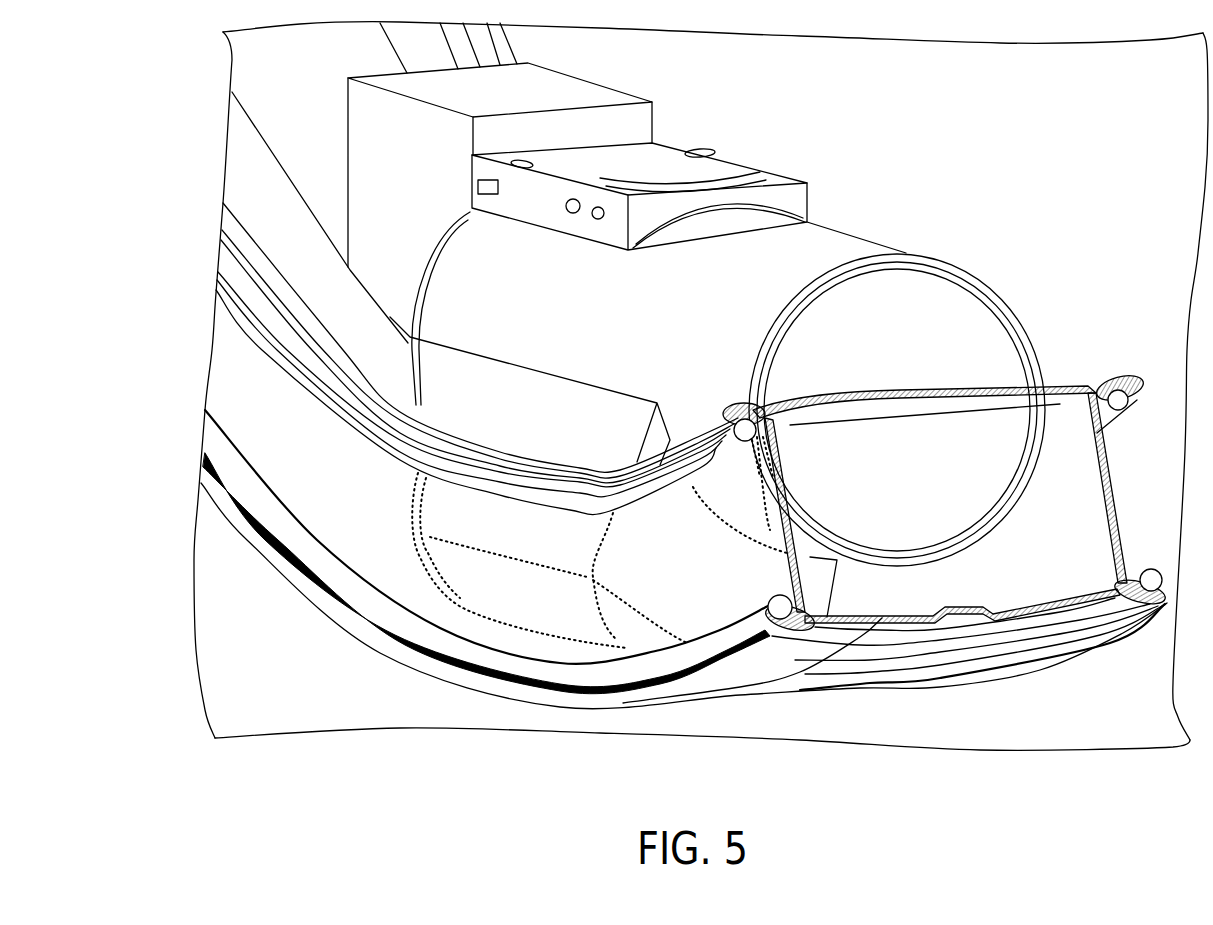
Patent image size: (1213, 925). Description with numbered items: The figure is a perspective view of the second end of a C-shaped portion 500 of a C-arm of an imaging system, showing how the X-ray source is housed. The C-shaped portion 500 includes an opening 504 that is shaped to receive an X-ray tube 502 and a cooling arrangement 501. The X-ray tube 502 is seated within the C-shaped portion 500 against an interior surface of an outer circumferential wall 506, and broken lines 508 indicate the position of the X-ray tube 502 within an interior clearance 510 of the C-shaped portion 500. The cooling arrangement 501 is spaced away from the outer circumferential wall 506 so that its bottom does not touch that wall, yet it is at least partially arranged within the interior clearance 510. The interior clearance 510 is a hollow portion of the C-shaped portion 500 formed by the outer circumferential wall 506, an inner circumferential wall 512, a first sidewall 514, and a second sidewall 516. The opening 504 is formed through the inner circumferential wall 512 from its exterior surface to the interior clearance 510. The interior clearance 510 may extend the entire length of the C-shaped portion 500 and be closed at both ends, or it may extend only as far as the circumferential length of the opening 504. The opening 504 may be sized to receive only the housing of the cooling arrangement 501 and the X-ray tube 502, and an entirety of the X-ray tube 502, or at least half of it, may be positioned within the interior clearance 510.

The C-shaped portion 500 is at (390, 655).
The cooling arrangement 501 is at (607, 88).
The X-ray tube 502 is at (850, 233).
The opening 504 is at (430, 420).
The outer circumferential wall 506 is at (1008, 608).
The broken lines 508 is at (393, 539).
The interior clearance 510 is at (945, 530).
The inner circumferential wall 512 is at (945, 393).
The first sidewall 514 is at (791, 497).
The second sidewall 516 is at (1099, 487).